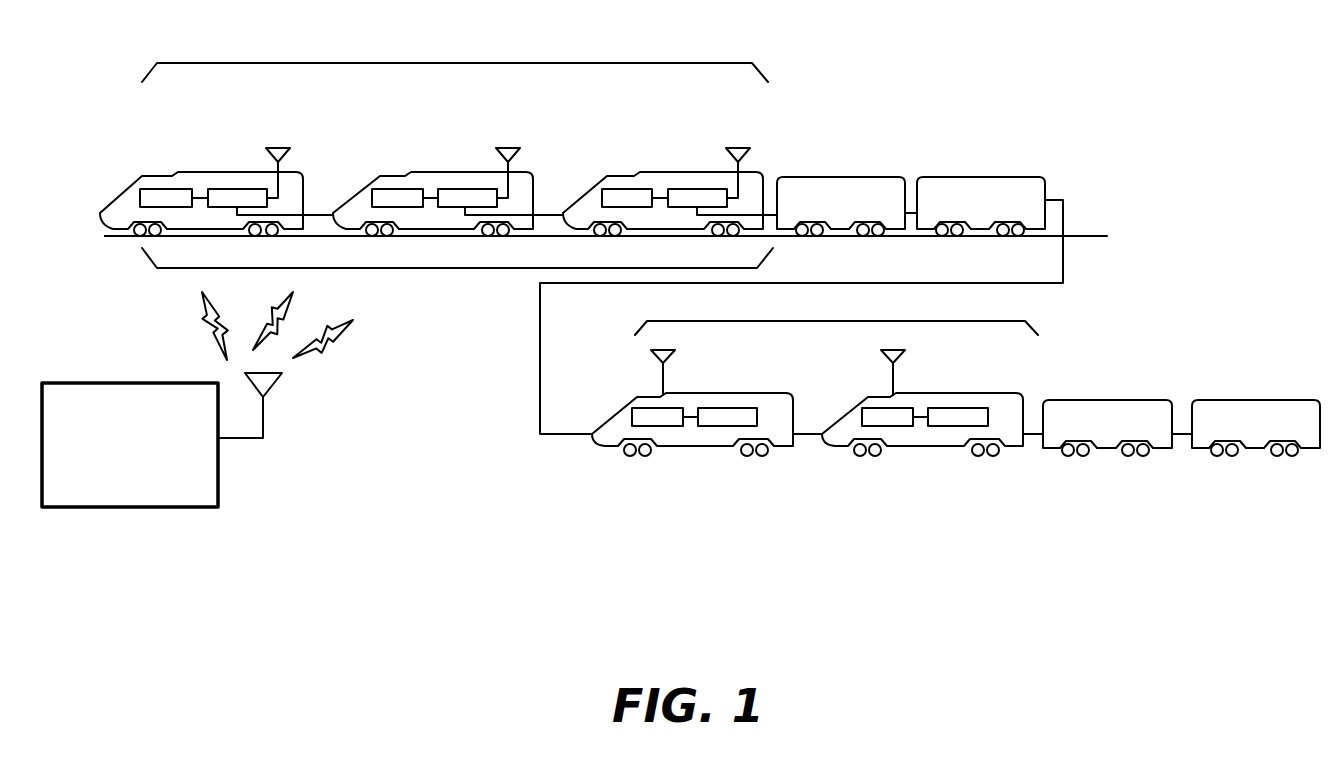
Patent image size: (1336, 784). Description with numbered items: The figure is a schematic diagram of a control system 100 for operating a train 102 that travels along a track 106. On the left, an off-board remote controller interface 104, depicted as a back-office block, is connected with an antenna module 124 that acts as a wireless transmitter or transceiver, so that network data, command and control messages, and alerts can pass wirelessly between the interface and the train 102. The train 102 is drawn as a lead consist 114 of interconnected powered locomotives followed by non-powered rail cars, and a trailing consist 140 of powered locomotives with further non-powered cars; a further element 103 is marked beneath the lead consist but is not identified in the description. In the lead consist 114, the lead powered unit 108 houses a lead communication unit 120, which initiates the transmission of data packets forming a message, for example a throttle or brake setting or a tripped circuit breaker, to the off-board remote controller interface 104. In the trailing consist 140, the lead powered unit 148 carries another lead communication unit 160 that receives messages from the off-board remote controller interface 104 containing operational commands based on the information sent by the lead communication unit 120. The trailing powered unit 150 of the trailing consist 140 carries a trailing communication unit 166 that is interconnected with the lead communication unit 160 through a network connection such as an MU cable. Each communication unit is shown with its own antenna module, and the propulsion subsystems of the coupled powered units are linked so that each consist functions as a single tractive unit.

The control system 100 is at (466, 63).
The train 102 is at (1058, 149).
The track 103 is at (138, 238).
The off-board remote controller interface 104 is at (218, 486).
The track 106 is at (1092, 234).
The lead powered unit 108 is at (198, 172).
The lead consist 114 is at (456, 268).
The lead communication unit 120 is at (248, 189).
The antenna module 124 is at (276, 385).
The trailing consist 140 is at (832, 321).
The lead powered unit of trailing consist 148 is at (722, 393).
The trailing powered unit of trailing consist 150 is at (962, 393).
The lead communication unit 160 is at (738, 428).
The trailing communication unit 166 is at (955, 428).